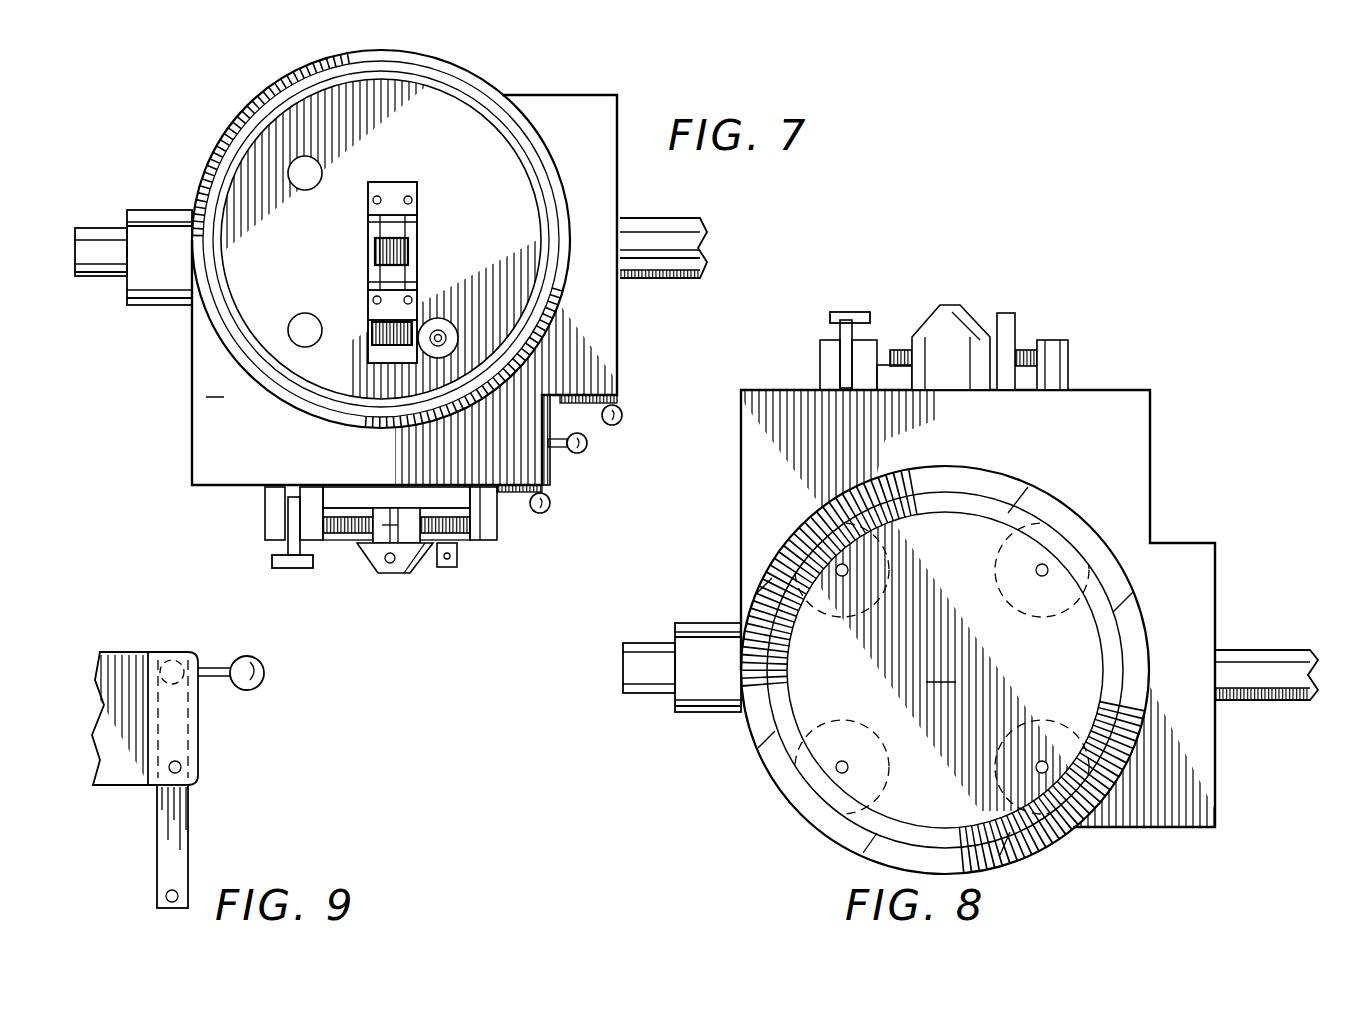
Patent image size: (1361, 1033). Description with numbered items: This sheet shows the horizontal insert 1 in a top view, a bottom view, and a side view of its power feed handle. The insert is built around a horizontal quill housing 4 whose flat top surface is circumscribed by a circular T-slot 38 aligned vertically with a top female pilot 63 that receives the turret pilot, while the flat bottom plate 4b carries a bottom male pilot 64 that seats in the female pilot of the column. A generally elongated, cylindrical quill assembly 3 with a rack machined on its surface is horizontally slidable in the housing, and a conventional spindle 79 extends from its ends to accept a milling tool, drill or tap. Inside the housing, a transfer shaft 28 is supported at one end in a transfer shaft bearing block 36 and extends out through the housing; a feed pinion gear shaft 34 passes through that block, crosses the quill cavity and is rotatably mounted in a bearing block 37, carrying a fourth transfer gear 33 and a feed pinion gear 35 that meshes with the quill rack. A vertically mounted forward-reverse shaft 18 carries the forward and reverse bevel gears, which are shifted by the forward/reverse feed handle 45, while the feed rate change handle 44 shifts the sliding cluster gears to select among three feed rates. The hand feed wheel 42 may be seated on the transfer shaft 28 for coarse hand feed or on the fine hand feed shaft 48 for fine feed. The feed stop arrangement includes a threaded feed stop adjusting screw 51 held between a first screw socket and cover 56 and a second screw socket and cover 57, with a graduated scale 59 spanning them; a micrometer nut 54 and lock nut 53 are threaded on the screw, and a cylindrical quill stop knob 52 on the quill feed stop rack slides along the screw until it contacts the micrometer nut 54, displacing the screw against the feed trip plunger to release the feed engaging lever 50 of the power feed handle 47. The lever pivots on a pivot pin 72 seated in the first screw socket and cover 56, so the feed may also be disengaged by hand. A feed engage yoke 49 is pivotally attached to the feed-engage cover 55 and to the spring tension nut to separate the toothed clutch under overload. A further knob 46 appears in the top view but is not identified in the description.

In FIG. 7, the horizontal insert 1 is at (215, 96).
In FIG. 7, the quill assembly 3 is at (144, 212).
In FIG. 8, the quill assembly 3 is at (706, 624).
In FIG. 7, the horizontal quill housing 4 is at (618, 112).
In FIG. 8, the horizontal quill housing 4 is at (1154, 440).
In FIG. 8, the bottom plate 4b is at (891, 609).
In FIG. 7, the forward-reverse shaft 18 is at (452, 338).
In FIG. 7, the transfer shaft 28 is at (391, 363).
In FIG. 7, the fourth transfer gear 33 is at (372, 322).
In FIG. 7, the feed pinion gear shaft 34 is at (412, 225).
In FIG. 7, the feed pinion gear 35 is at (412, 262).
In FIG. 7, the transfer shaft bearing block 36 is at (412, 305).
In FIG. 7, the bearing block 37 is at (398, 190).
In FIG. 7, the circular T-slot 38 is at (527, 150).
In FIG. 7, the hand feed wheel 42 is at (412, 572).
In FIG. 8, the hand feed wheel 42 is at (947, 306).
In FIG. 7, the feed rate change handle 44 is at (551, 503).
In FIG. 7, the forward/reverse feed handle 45 is at (588, 443).
In FIG. 7, the knob 46 is at (623, 415).
In FIG. 7, the power feed handle 47 is at (290, 568).
In FIG. 8, the power feed handle 47 is at (832, 315).
In FIG. 9, the power feed handle 47 is at (250, 684).
In FIG. 7, the fine hand feed shaft 48 is at (455, 560).
In FIG. 8, the fine hand feed shaft 48 is at (1008, 314).
In FIG. 8, the feed engage yoke 49 is at (952, 364).
In FIG. 7, the feed engaging lever 50 is at (294, 497).
In FIG. 8, the feed engaging lever 50 is at (843, 340).
In FIG. 9, the feed engaging lever 50 is at (185, 840).
In FIG. 7, the feed stop adjusting screw 51 is at (345, 533).
In FIG. 8, the feed stop adjusting screw 51 is at (898, 350).
In FIG. 7, the quill stop knob 52 is at (425, 520).
In FIG. 7, the lock nut 53 is at (394, 512).
In FIG. 7, the micrometer nut 54 is at (400, 522).
In FIG. 8, the feed-engage cover 55 is at (978, 390).
In FIG. 7, the first screw socket and cover 56 is at (266, 500).
In FIG. 8, the first screw socket and cover 56 is at (822, 355).
In FIG. 9, the first screw socket and cover 56 is at (160, 655).
In FIG. 7, the second screw socket and cover 57 is at (498, 514).
In FIG. 8, the second screw socket and cover 57 is at (1069, 350).
In FIG. 7, the graduated scale 59 is at (338, 497).
In FIG. 8, the graduated scale 59 is at (882, 365).
In FIG. 7, the top female pilot 63 is at (498, 72).
In FIG. 8, the bottom male pilot 64 is at (1138, 612).
In FIG. 9, the pivot pin 72 is at (182, 767).
In FIG. 7, the spindle 79 is at (100, 232).
In FIG. 8, the spindle 79 is at (652, 650).